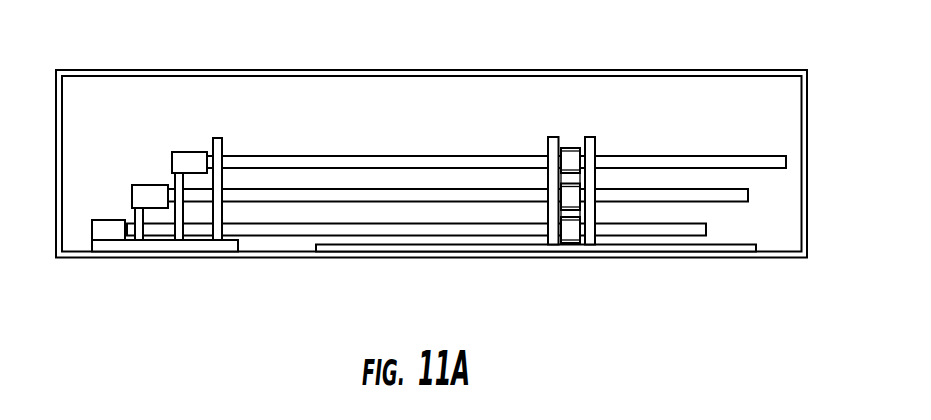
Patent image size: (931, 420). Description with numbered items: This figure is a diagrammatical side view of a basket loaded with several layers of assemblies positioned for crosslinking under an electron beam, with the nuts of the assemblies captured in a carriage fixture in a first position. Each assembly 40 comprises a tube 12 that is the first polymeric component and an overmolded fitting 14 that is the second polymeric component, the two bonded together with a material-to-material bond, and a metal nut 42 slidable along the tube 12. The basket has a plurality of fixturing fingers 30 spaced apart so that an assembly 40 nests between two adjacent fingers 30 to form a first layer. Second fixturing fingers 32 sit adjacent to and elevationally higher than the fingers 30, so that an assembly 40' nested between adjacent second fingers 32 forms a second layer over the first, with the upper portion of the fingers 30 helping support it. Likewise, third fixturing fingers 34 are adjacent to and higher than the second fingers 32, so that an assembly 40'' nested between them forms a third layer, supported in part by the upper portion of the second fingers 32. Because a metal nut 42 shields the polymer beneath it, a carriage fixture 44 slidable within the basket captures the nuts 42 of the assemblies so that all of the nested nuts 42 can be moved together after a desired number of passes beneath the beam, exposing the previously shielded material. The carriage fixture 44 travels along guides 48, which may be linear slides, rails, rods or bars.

The first polymeric component 12 is at (456, 197).
The second polymeric component 14 is at (148, 185).
The fixturing fingers 30 is at (137, 233).
The second fixturing fingers 32 is at (178, 235).
The third fixturing fingers 34 is at (218, 212).
The assembly 40 is at (416, 270).
The assembly 40' is at (458, 149).
The assembly 40'' is at (496, 126).
The nut 42 is at (575, 194).
The carriage fixture 44 is at (612, 150).
The guides 48 is at (683, 250).